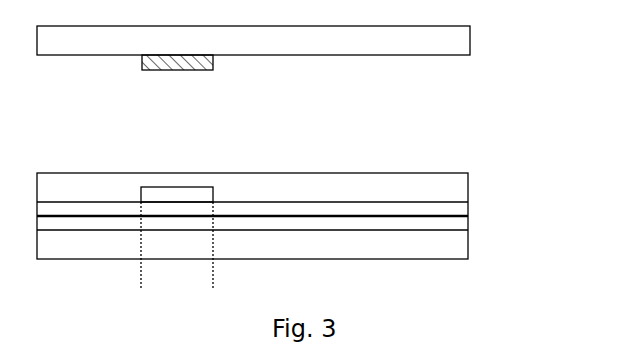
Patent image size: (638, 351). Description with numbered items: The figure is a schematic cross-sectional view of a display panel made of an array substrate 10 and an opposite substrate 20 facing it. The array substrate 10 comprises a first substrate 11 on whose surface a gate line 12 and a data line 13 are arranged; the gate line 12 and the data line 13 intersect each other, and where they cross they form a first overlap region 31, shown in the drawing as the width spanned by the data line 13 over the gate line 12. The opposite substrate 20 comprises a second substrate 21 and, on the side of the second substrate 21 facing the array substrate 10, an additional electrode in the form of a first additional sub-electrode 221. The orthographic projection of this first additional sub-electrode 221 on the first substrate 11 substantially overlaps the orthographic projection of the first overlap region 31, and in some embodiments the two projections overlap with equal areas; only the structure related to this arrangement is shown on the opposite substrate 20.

The array substrate 10 is at (312, 217).
The first substrate 11 is at (455, 244).
The gate line 12 is at (455, 220).
The data line 13 is at (166, 196).
The first overlap region 31 is at (244, 271).
The opposite substrate 20 is at (300, 64).
The second substrate 21 is at (448, 38).
The first additional sub-electrode 221 is at (145, 62).